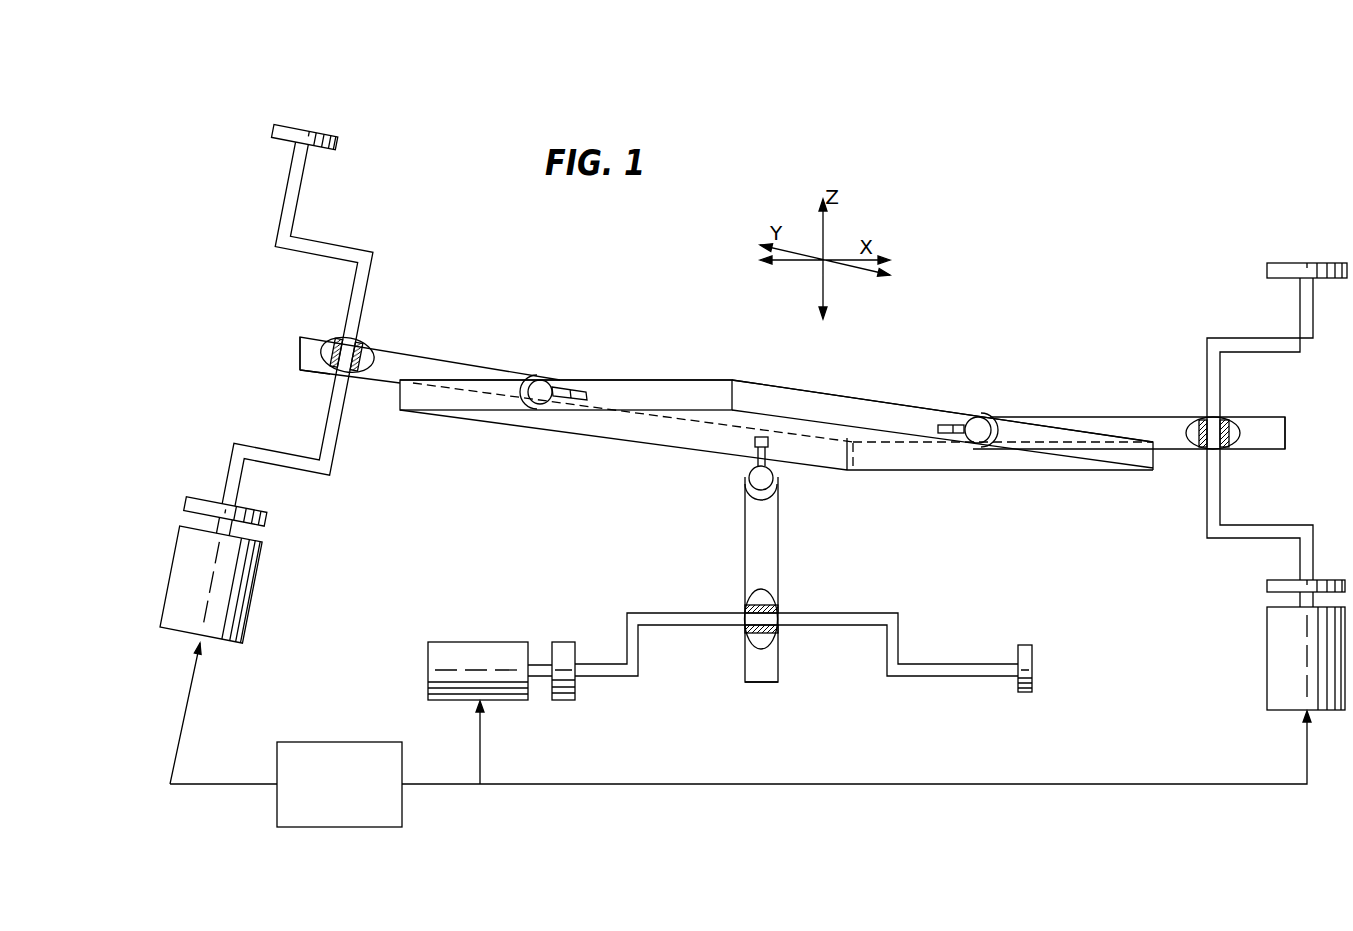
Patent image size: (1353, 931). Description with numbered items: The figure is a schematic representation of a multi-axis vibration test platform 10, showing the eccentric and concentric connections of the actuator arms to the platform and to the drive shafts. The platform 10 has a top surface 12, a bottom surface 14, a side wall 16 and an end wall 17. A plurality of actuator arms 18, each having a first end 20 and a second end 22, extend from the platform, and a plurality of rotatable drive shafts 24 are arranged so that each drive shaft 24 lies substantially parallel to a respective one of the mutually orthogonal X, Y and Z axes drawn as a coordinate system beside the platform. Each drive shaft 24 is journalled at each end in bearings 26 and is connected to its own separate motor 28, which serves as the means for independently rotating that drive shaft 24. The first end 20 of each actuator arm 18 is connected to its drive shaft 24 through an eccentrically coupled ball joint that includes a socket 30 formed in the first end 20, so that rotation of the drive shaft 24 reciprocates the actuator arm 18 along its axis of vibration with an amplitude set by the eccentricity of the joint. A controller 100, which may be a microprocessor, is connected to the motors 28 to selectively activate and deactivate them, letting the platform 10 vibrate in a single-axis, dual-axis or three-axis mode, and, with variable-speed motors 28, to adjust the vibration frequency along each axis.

The multi-axis vibration test platform 10 is at (866, 393).
The top surface 12 is at (690, 392).
The bottom surface 14 is at (910, 453).
The side wall 16 is at (932, 420).
The end wall 17 is at (603, 390).
The actuator arm 18 is at (465, 357).
The first end 20 is at (323, 346).
The second end 22 is at (527, 380).
The drive shaft 24 is at (350, 241).
The bearing 26 is at (336, 136).
The motor 28 is at (433, 646).
The socket 30 is at (371, 340).
The controller 100 is at (402, 758).